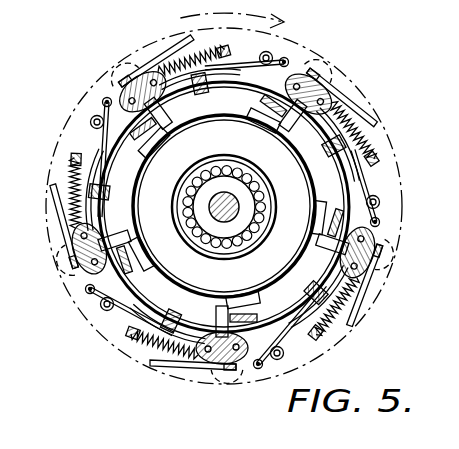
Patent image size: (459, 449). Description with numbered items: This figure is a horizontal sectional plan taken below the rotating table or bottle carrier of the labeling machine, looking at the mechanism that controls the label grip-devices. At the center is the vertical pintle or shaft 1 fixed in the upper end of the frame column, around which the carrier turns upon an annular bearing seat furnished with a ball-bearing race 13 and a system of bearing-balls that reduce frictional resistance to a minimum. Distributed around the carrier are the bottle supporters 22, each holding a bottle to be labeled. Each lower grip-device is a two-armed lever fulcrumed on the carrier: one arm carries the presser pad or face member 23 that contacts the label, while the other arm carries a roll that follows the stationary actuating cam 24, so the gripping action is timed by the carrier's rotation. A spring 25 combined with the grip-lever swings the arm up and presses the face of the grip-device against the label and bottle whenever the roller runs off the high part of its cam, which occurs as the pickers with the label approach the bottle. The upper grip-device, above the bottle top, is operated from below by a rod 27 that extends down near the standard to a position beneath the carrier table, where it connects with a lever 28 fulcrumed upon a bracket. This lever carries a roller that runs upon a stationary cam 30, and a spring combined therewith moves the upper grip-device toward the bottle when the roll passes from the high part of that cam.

The vertical pintle or shaft 1 is at (224, 207).
The ball-bearing race 13 is at (263, 190).
The bottle supporter 22 is at (78, 256).
The presser pad or face member 23 is at (362, 302).
The stationary actuating cam 24 is at (143, 163).
The spring 25 is at (78, 198).
The rod 27 is at (380, 221).
The lever 28 is at (378, 199).
The stationary cam 30 is at (123, 134).